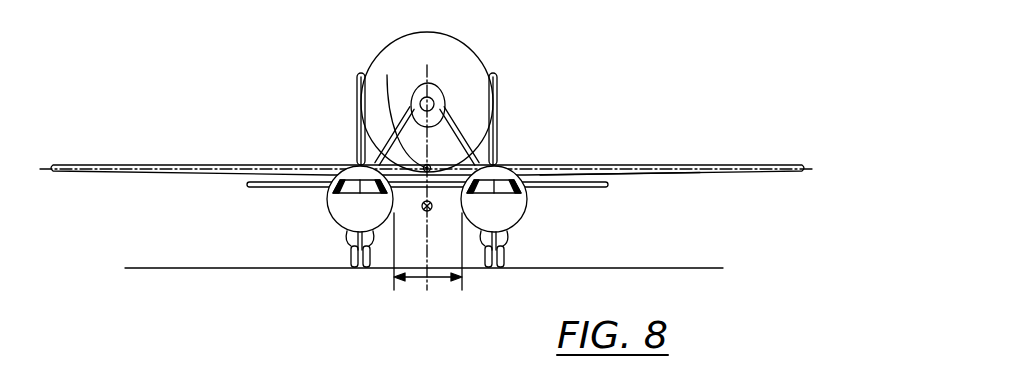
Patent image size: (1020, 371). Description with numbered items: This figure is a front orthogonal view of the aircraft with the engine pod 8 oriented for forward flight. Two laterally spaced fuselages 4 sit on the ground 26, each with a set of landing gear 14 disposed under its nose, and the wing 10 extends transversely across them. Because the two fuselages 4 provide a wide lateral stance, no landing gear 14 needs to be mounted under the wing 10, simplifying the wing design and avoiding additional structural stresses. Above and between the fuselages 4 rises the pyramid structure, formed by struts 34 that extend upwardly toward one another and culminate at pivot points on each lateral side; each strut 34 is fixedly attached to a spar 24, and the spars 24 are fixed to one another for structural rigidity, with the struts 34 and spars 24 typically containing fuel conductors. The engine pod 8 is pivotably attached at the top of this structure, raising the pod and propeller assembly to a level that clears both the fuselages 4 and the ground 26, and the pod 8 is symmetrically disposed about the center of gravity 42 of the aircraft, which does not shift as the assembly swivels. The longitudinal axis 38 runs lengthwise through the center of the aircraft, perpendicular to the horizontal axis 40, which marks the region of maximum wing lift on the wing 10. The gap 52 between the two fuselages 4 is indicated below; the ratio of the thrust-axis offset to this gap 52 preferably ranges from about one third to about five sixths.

The fuselage 4 is at (330, 208).
The engine pod 8 is at (440, 78).
The wing 10 is at (256, 165).
The landing gear 14 is at (351, 253).
The spar 24 is at (406, 176).
The ground 26 is at (612, 268).
The strut 34 is at (470, 120).
The longitudinal axis 38 is at (387, 75).
The horizontal axis 40 is at (684, 172).
The center of gravity 42 is at (430, 211).
The gap 52 is at (415, 279).